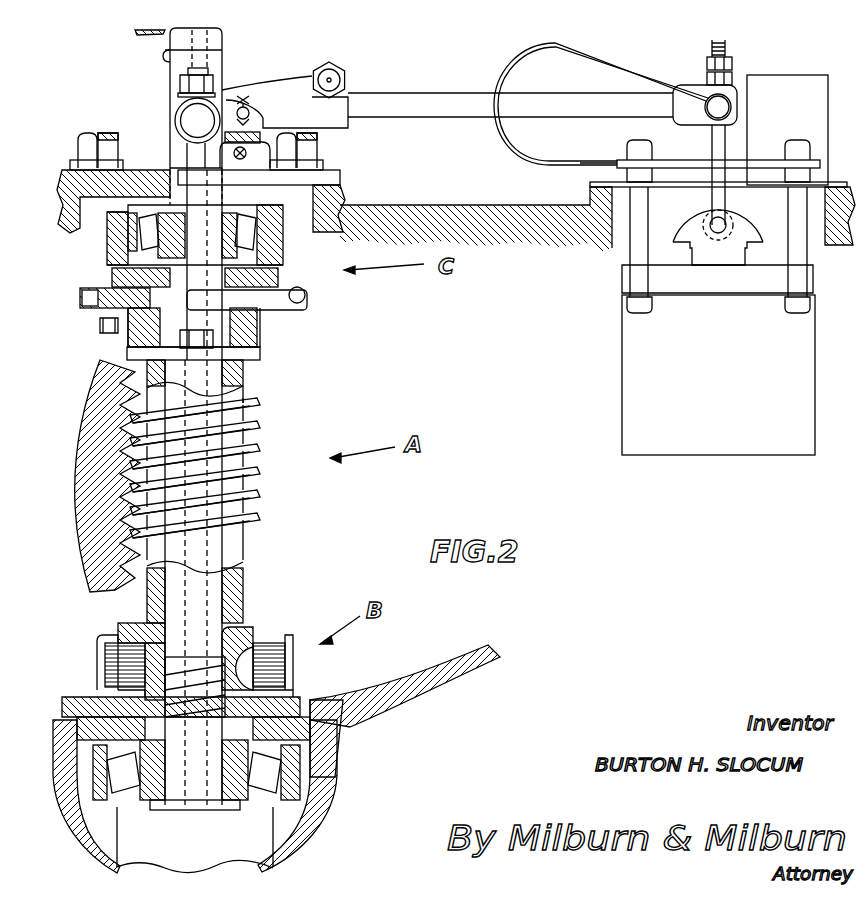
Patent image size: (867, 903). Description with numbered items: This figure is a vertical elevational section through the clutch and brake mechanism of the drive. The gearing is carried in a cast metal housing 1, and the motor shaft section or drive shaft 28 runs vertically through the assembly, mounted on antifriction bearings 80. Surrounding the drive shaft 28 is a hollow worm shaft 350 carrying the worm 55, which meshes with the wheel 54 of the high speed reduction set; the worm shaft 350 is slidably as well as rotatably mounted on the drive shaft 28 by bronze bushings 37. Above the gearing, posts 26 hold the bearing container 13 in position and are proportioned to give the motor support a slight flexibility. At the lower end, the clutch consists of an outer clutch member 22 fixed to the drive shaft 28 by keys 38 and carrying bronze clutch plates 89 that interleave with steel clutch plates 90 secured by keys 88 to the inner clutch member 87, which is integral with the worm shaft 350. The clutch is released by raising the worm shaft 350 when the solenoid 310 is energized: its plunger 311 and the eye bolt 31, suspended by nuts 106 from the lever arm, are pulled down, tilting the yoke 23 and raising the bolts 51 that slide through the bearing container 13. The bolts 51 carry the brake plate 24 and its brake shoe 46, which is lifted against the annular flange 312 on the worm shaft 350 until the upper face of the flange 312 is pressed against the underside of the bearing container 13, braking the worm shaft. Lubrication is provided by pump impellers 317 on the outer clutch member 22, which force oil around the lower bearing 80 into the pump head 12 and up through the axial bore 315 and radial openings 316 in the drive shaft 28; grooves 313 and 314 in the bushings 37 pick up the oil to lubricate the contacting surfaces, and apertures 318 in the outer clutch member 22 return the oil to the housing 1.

The housing 1 is at (444, 204).
The pump head 12 is at (336, 790).
The bearing container 13 is at (338, 178).
The outer clutch member 22 is at (97, 651).
The yoke 23 is at (262, 84).
The brake plate 24 is at (306, 308).
The posts 26 is at (86, 0).
The drive shaft 28 is at (206, 62).
The eye bolt 31 is at (712, 146).
The bushings 37 is at (226, 292).
The keys 38 is at (230, 795).
The brake shoe 46 is at (308, 296).
The bolts 51 is at (185, 148).
The wheel 54 is at (98, 441).
The worm 55 is at (262, 436).
The antifriction bearings 80 is at (285, 241).
The inner clutch member 87 is at (112, 638).
The keys 88 is at (244, 630).
The clutch plates 89 is at (283, 658).
The clutch plates 90 is at (258, 632).
The nuts 106 is at (734, 68).
The solenoid 310 is at (618, 326).
The solenoid plunger 311 is at (742, 222).
The annular flange 312 is at (110, 280).
The groove 313 is at (115, 312).
The groove 314 is at (176, 700).
The axial bore 315 is at (243, 601).
The radial openings 316 is at (108, 208).
The pump impellers 317 is at (345, 727).
The apertures 318 is at (311, 700).
The hollow worm shaft 350 is at (245, 378).